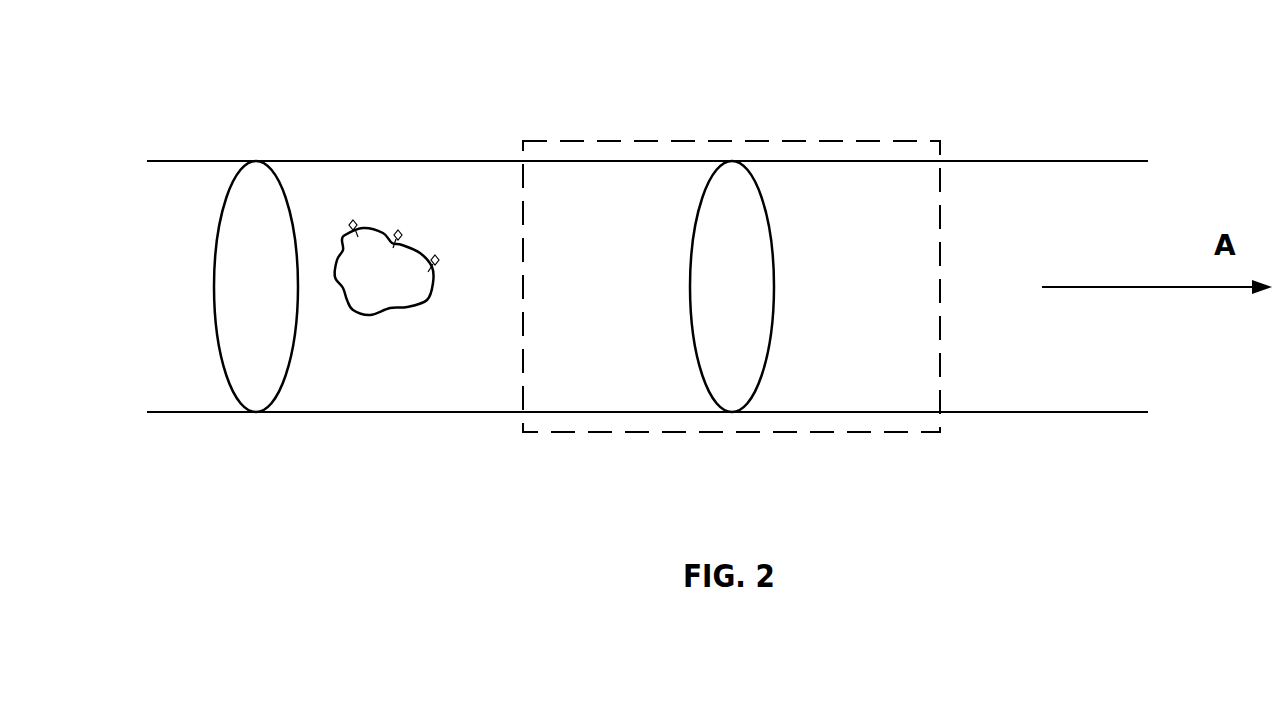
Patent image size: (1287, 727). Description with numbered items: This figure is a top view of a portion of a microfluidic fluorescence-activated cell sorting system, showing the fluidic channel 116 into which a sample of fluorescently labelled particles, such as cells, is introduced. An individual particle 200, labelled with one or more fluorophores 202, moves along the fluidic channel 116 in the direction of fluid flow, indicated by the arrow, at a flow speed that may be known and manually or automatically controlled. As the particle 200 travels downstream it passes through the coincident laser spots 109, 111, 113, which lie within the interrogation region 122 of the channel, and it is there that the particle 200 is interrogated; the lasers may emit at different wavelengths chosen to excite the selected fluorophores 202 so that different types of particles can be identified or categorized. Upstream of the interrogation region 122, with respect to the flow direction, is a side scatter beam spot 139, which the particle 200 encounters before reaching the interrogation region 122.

The fluidic channel 116 is at (1028, 160).
The side scatter beam spot 139 is at (255, 160).
The interrogation region 122 is at (878, 140).
The laser spot 109 is at (641, 334).
The laser spot 111 is at (641, 334).
The laser spot 113 is at (720, 410).
The particle 200 is at (388, 193).
The fluorophores 202 is at (436, 256).